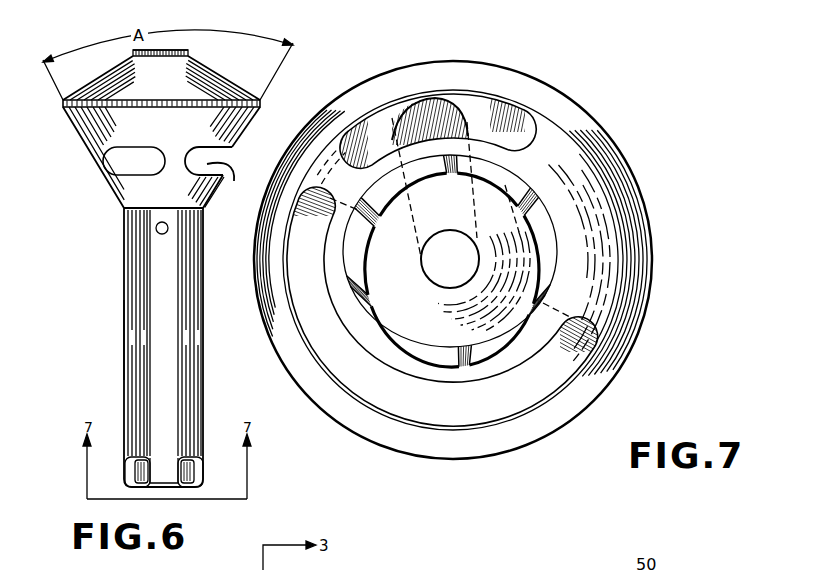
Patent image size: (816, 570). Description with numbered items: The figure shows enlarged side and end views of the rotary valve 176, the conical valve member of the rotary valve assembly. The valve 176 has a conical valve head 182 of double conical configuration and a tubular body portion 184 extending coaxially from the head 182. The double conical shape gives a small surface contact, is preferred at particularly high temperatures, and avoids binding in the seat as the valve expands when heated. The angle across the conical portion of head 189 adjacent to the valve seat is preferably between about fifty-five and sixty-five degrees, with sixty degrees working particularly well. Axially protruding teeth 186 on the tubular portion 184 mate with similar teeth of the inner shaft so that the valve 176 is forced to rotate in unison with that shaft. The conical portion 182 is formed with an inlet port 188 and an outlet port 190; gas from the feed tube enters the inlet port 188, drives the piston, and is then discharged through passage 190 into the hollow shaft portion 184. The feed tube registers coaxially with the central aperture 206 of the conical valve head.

In FIG. 6, the rotary valve 176 is at (123, 330).
In FIG. 7, the rotary valve 176 is at (495, 58).
In FIG. 6, the conical valve head 182 is at (243, 89).
In FIG. 7, the conical valve head 182 is at (548, 85).
In FIG. 6, the tubular body portion 184 is at (203, 318).
In FIG. 7, the tubular body portion 184 is at (552, 222).
In FIG. 6, the axially protruding teeth 186 is at (170, 470).
In FIG. 7, the axially protruding teeth 186 is at (493, 177).
In FIG. 6, the inlet port 188 is at (118, 162).
In FIG. 7, the inlet port 188 is at (387, 113).
In FIG. 6, the conical portion of head 189 is at (102, 152).
In FIG. 6, the outlet port 190 is at (218, 175).
In FIG. 7, the outlet port 190 is at (548, 365).
In FIG. 6, the central aperture 206 is at (153, 52).